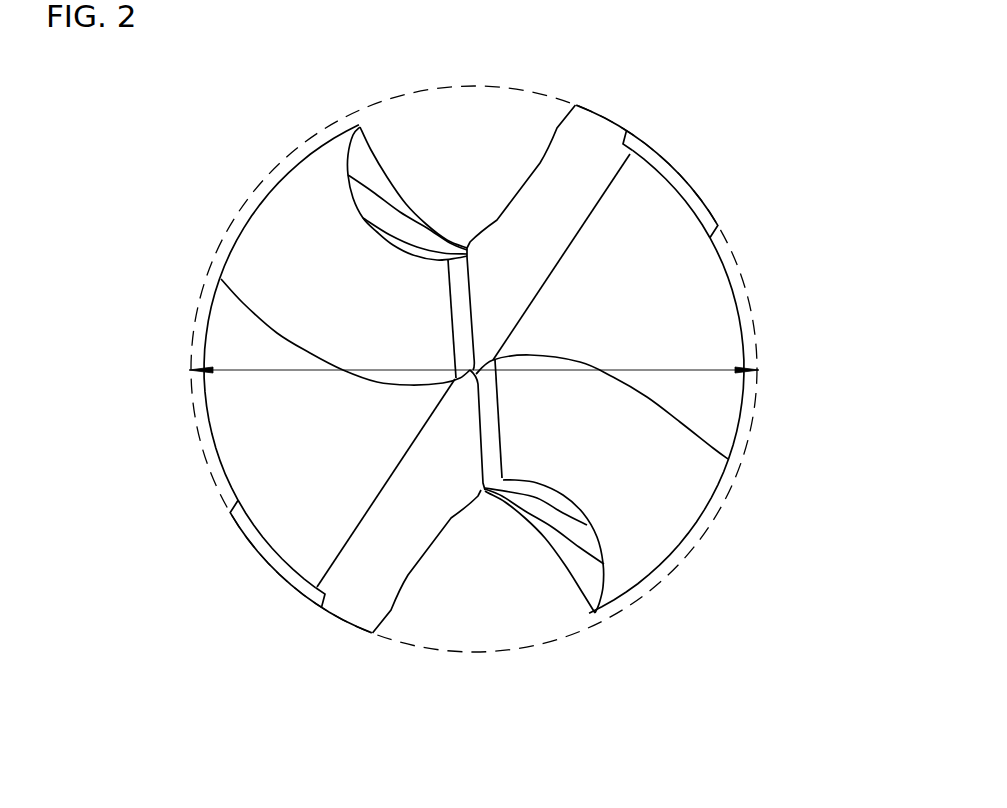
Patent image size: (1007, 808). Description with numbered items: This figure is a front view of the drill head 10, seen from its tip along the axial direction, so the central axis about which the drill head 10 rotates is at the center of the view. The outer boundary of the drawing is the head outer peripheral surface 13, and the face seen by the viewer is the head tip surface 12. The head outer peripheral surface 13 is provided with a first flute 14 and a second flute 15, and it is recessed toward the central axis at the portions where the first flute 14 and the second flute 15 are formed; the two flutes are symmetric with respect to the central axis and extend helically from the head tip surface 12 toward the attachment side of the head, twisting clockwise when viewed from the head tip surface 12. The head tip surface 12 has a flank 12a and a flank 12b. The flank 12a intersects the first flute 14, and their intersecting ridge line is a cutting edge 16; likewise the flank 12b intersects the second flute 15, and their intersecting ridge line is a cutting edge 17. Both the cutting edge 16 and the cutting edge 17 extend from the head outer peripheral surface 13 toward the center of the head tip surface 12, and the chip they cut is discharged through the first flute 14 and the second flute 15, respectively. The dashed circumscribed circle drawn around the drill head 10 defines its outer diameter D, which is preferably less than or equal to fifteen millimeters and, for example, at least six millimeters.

The drill head 10 is at (710, 122).
The head tip surface 12 is at (698, 278).
The flank 12a is at (558, 178).
The flank 12b is at (354, 600).
The head outer peripheral surface 13 is at (745, 341).
The first flute 14 is at (410, 235).
The second flute 15 is at (585, 565).
The cutting edge 16 is at (508, 207).
The cutting edge 17 is at (418, 567).
The outer diameter D is at (252, 365).